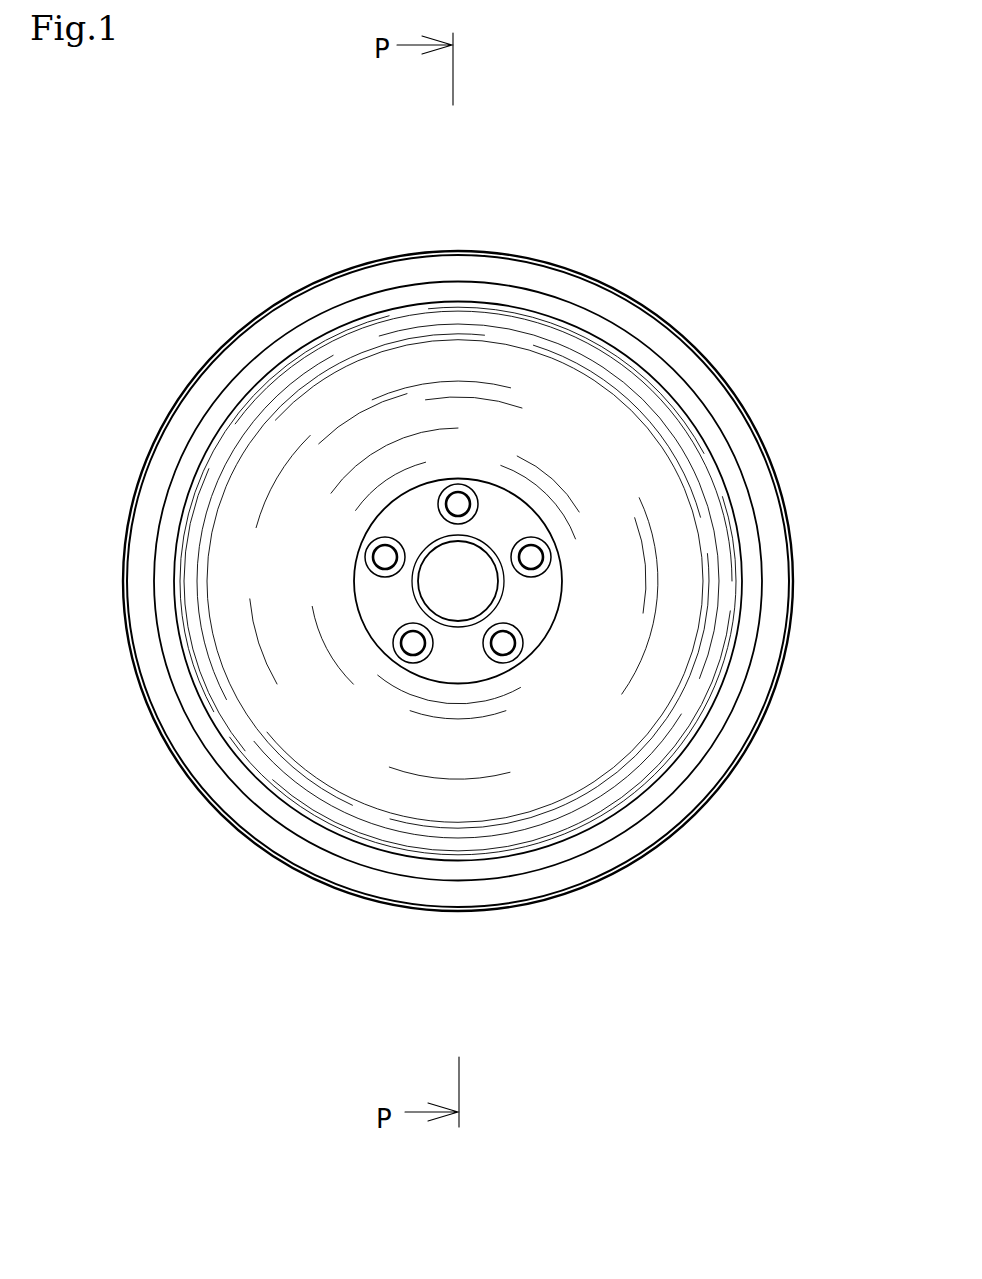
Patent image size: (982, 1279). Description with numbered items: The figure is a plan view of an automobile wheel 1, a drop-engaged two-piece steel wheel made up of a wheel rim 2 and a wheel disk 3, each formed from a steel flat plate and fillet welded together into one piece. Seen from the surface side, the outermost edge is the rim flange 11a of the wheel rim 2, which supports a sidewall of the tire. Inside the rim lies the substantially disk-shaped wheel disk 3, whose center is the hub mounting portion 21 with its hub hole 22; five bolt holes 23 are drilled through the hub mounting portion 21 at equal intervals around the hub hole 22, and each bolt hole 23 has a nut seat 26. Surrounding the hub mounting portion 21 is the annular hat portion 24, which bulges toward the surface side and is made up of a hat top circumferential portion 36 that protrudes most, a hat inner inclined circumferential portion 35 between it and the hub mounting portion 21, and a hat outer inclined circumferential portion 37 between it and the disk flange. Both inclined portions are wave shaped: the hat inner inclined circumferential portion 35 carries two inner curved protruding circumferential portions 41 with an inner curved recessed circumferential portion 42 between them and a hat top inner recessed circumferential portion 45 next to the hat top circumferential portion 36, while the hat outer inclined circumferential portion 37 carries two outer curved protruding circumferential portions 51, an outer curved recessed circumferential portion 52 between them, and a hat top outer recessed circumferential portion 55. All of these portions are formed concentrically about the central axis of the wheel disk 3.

The automobile wheel 1 is at (690, 254).
The wheel rim 2 is at (695, 345).
The wheel disk 3 is at (682, 523).
The rim flange 11a is at (430, 262).
The hub mounting portion 21 is at (477, 667).
The hub hole 22 is at (472, 563).
The bolt holes 23 is at (458, 500).
The hat portion 24 is at (497, 358).
The nut seat 26 is at (518, 655).
The hat inner inclined circumferential portion 35 is at (607, 662).
The hat top circumferential portion 36 is at (262, 625).
The hat outer inclined circumferential portion 37 is at (421, 367).
The inner curved protruding circumferential portion 41 is at (470, 703).
The inner curved recessed circumferential portion 42 is at (433, 713).
The hat top inner recessed circumferential portion 45 is at (338, 708).
The outer curved protruding circumferential portion 51 is at (220, 483).
The outer curved recessed circumferential portion 52 is at (197, 528).
The hat top outer recessed circumferential portion 55 is at (253, 685).